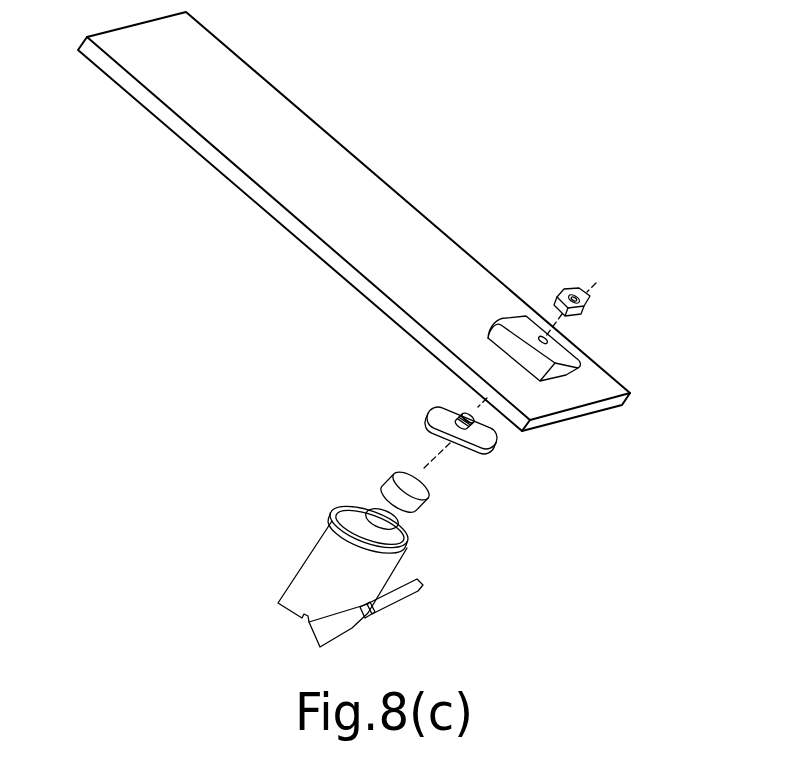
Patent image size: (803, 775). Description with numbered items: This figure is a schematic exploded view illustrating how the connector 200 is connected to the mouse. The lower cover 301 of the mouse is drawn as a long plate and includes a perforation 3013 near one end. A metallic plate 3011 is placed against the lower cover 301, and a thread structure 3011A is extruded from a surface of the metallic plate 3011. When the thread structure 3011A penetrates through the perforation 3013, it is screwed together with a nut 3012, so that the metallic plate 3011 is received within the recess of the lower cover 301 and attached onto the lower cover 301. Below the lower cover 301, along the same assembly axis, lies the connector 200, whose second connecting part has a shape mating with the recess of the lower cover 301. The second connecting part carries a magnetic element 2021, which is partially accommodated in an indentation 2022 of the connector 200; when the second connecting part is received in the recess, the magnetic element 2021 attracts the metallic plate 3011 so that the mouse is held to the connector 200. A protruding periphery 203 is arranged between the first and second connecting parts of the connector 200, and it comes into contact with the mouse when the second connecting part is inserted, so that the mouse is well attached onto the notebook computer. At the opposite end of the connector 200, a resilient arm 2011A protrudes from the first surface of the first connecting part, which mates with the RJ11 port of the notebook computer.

The lower cover 301 is at (278, 128).
The nut 3012 is at (565, 292).
The perforation 3013 is at (618, 397).
The metallic plate 3011 is at (443, 407).
The thread structure 3011A is at (483, 423).
The magnetic element 2021 is at (428, 492).
The indentation 2022 is at (375, 502).
The protruding periphery 203 is at (342, 513).
The connector 200 is at (327, 585).
The resilient arm 2011A is at (408, 597).